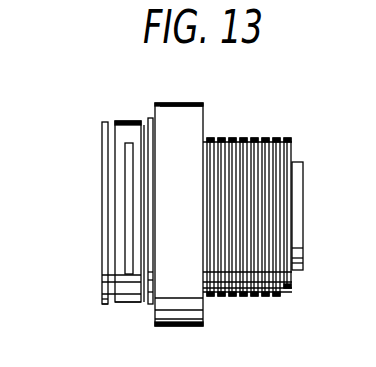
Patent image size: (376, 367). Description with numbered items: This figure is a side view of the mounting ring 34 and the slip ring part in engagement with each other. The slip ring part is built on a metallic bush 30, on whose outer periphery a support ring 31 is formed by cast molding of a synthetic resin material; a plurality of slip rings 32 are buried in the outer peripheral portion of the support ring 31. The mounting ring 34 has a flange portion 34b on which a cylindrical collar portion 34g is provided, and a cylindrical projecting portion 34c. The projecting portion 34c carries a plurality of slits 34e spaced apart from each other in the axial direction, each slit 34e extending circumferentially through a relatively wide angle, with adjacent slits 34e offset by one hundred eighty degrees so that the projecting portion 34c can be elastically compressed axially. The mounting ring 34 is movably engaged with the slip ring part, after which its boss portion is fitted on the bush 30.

The metallic bush 30 is at (294, 162).
The support ring 31 is at (290, 290).
The slip rings 32 is at (237, 138).
The mounting ring 34 is at (154, 104).
The flange portion 34b is at (150, 117).
The cylindrical projecting portion 34c is at (118, 123).
The slits 34e is at (148, 278).
The cylindrical collar portion 34g is at (209, 94).